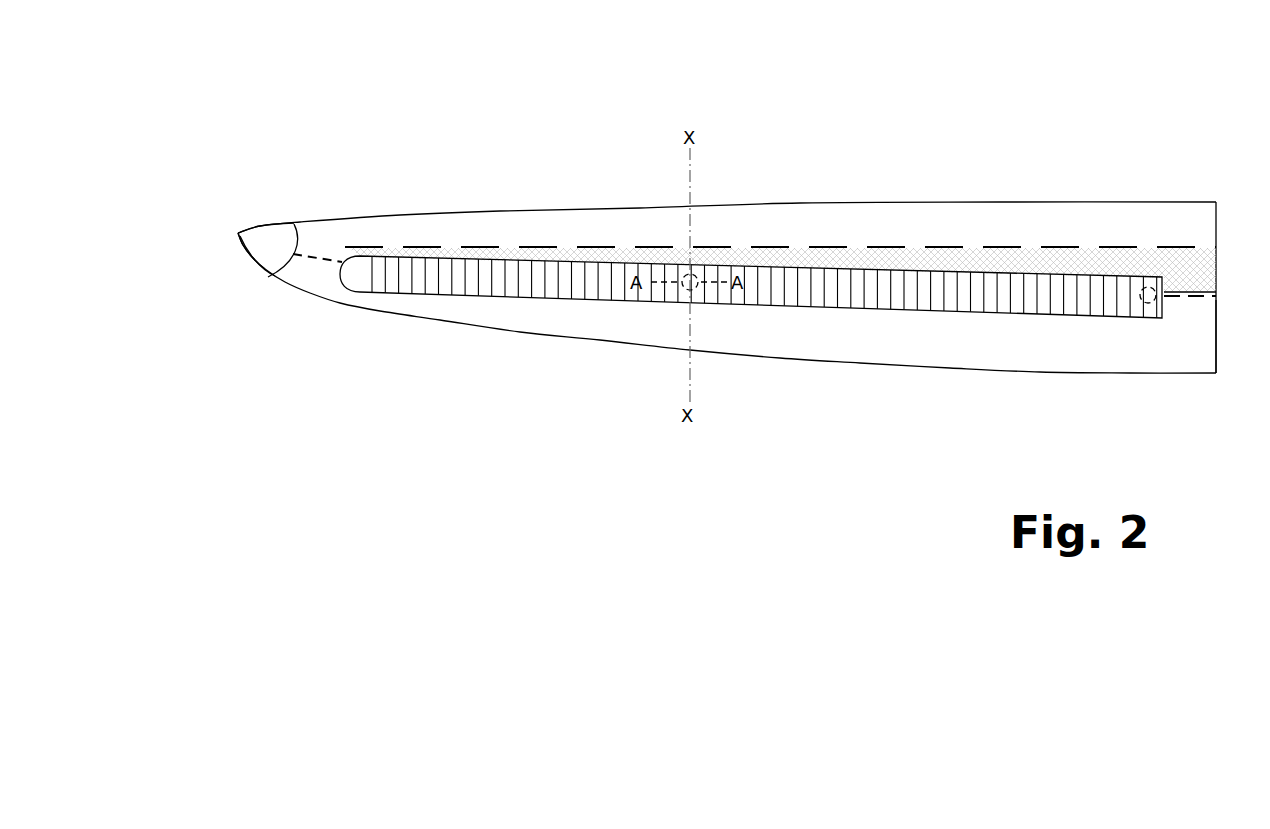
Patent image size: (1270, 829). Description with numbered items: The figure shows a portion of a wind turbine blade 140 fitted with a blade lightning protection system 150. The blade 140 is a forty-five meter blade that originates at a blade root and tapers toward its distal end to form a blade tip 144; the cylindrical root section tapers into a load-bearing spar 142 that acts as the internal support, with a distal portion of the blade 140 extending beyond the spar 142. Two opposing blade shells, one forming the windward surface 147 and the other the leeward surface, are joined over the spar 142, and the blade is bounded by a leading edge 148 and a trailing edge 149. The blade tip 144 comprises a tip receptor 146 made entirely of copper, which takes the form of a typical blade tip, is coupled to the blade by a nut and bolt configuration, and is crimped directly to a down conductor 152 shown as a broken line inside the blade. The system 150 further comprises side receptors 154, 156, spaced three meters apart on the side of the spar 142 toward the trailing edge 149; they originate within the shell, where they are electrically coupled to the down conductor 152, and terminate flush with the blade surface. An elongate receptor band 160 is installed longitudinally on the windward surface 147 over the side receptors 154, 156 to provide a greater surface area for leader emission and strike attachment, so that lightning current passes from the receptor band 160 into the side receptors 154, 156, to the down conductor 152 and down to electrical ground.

The wind turbine blade 140 is at (724, 95).
The load-bearing spar 142 is at (482, 255).
The blade tip 144 is at (213, 228).
The tip receptor 146 is at (262, 254).
The windward surface 147 is at (1160, 352).
The leading edge 148 is at (812, 204).
The trailing edge 149 is at (917, 368).
The blade lightning protection system 150 is at (309, 222).
The down conductor 152 is at (312, 258).
The side receptor 154 is at (684, 277).
The side receptor 156 is at (1140, 290).
The receptor band 160 is at (408, 270).